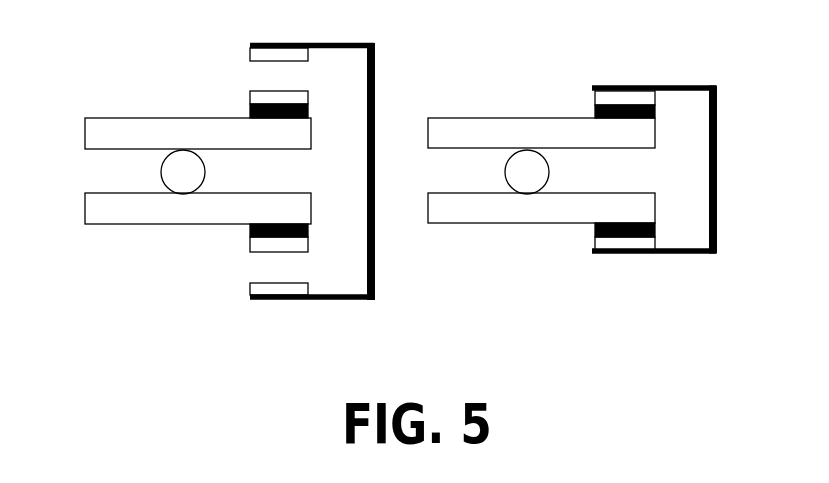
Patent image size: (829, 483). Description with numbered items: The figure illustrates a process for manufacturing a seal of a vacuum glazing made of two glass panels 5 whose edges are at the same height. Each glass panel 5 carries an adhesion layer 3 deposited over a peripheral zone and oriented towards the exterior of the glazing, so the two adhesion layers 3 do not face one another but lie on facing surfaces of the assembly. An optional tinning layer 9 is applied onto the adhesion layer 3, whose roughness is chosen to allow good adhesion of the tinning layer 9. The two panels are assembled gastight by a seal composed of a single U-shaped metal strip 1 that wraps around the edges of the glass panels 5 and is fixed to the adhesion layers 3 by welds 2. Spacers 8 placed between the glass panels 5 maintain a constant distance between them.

The metal strip 1 is at (375, 56).
The weld 2 is at (625, 98).
The adhesion layer 3 is at (250, 110).
The glass panel 5 is at (115, 132).
The spacer 8 is at (160, 170).
The tinning layer 9 is at (255, 95).